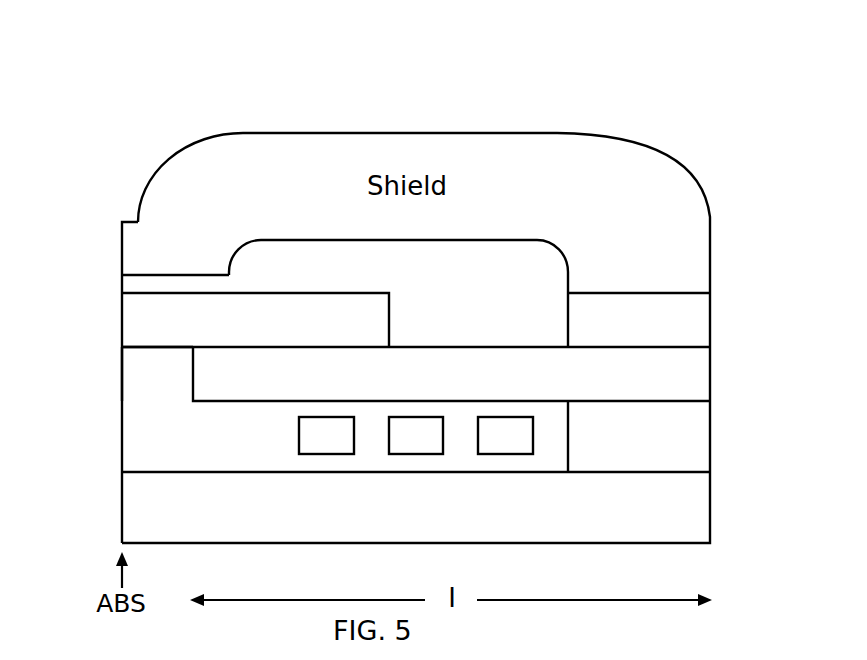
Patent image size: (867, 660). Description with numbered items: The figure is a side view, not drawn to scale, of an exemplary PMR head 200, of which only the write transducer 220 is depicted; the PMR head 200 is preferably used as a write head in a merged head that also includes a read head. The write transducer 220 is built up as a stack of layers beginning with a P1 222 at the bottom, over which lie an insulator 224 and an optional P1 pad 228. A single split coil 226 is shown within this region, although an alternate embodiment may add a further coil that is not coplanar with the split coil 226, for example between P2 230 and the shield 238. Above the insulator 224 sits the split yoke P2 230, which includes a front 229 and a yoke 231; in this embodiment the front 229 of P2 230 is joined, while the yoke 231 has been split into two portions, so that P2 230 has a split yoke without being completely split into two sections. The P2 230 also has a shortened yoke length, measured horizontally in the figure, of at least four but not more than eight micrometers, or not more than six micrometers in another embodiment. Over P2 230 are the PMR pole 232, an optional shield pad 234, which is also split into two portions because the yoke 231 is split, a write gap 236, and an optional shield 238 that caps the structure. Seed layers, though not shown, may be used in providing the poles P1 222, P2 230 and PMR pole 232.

The PMR head 200 is at (395, 37).
The write transducer 220 is at (379, 95).
The P1 222 is at (122, 522).
The insulator 224 is at (121, 376).
The split coil 226 is at (282, 436).
The P1 pad 228 is at (712, 440).
The front 229 is at (165, 383).
The split yoke P2 230 is at (730, 378).
The yoke 231 is at (460, 318).
The PMR pole 232 is at (318, 293).
The shield pad 234 is at (730, 308).
The write gap 236 is at (122, 284).
The shield 238 is at (148, 190).